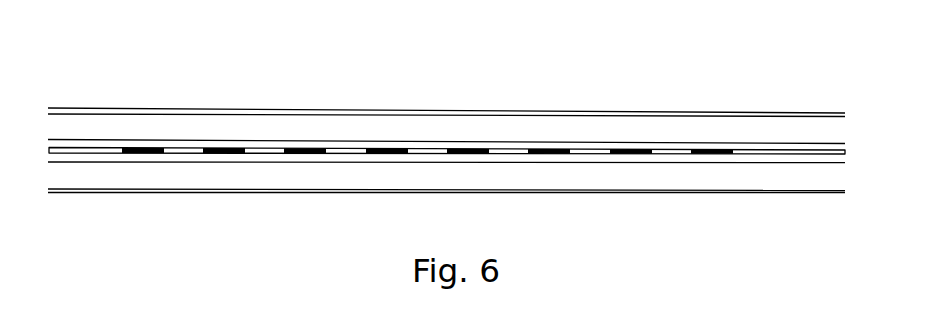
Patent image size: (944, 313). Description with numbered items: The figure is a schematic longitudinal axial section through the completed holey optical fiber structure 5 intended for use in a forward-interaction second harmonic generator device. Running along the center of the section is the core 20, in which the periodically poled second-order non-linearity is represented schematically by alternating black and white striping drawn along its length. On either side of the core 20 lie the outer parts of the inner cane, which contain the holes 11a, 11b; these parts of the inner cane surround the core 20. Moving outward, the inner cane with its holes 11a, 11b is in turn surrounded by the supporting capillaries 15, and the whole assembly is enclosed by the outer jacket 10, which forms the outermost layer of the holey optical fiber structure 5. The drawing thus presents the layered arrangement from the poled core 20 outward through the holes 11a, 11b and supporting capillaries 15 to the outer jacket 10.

The holey optical fiber structure 5 is at (405, 82).
The outer jacket 10 is at (662, 112).
The hole 11a is at (800, 146).
The hole 11b is at (446, 162).
The supporting capillaries 15 is at (707, 183).
The core 20 is at (775, 158).